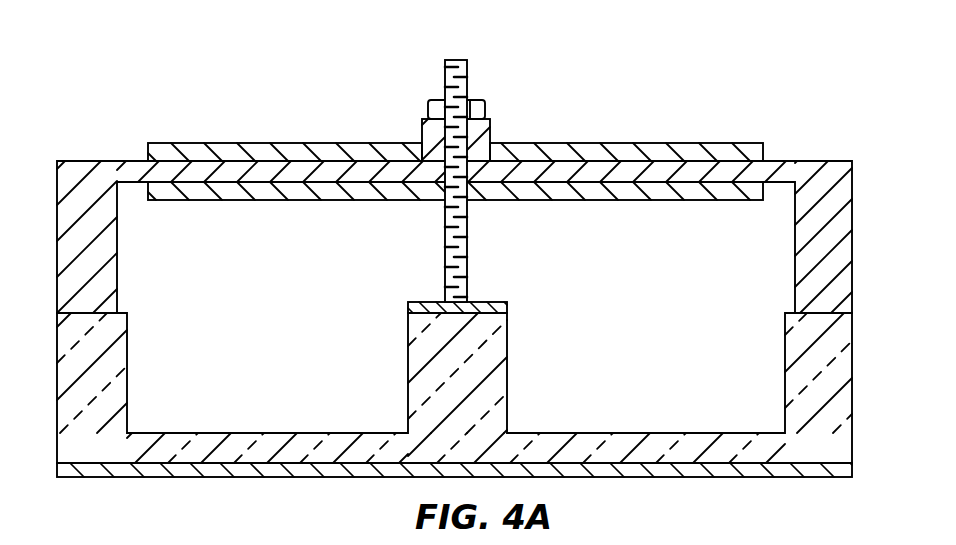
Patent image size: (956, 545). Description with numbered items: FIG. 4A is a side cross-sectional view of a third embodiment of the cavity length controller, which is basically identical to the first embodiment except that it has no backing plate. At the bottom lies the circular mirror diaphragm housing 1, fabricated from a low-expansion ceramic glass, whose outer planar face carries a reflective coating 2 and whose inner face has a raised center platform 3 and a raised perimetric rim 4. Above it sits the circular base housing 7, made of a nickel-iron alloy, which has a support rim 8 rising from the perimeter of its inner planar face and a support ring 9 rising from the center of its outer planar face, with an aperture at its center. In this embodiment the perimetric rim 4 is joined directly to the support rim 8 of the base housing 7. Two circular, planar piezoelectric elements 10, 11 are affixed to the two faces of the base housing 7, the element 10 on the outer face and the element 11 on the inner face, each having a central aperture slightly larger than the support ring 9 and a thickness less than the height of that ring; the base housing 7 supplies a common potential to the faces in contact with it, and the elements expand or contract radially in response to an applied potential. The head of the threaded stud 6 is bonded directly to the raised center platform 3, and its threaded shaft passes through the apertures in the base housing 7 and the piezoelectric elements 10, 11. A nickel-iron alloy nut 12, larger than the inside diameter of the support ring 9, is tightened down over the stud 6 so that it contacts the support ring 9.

The circular mirror diaphragm housing 1 is at (474, 389).
The reflective coating 2 is at (212, 478).
The raised center platform 3 is at (507, 371).
The raised perimetric rim 4 is at (127, 381).
The threaded stud 6 is at (467, 70).
The circular base housing 7 is at (473, 237).
The support rim 8 is at (117, 276).
The support ring 9 is at (490, 128).
The piezoelectric element 10 is at (313, 143).
The piezoelectric element 11 is at (336, 200).
The nut 12 is at (485, 110).